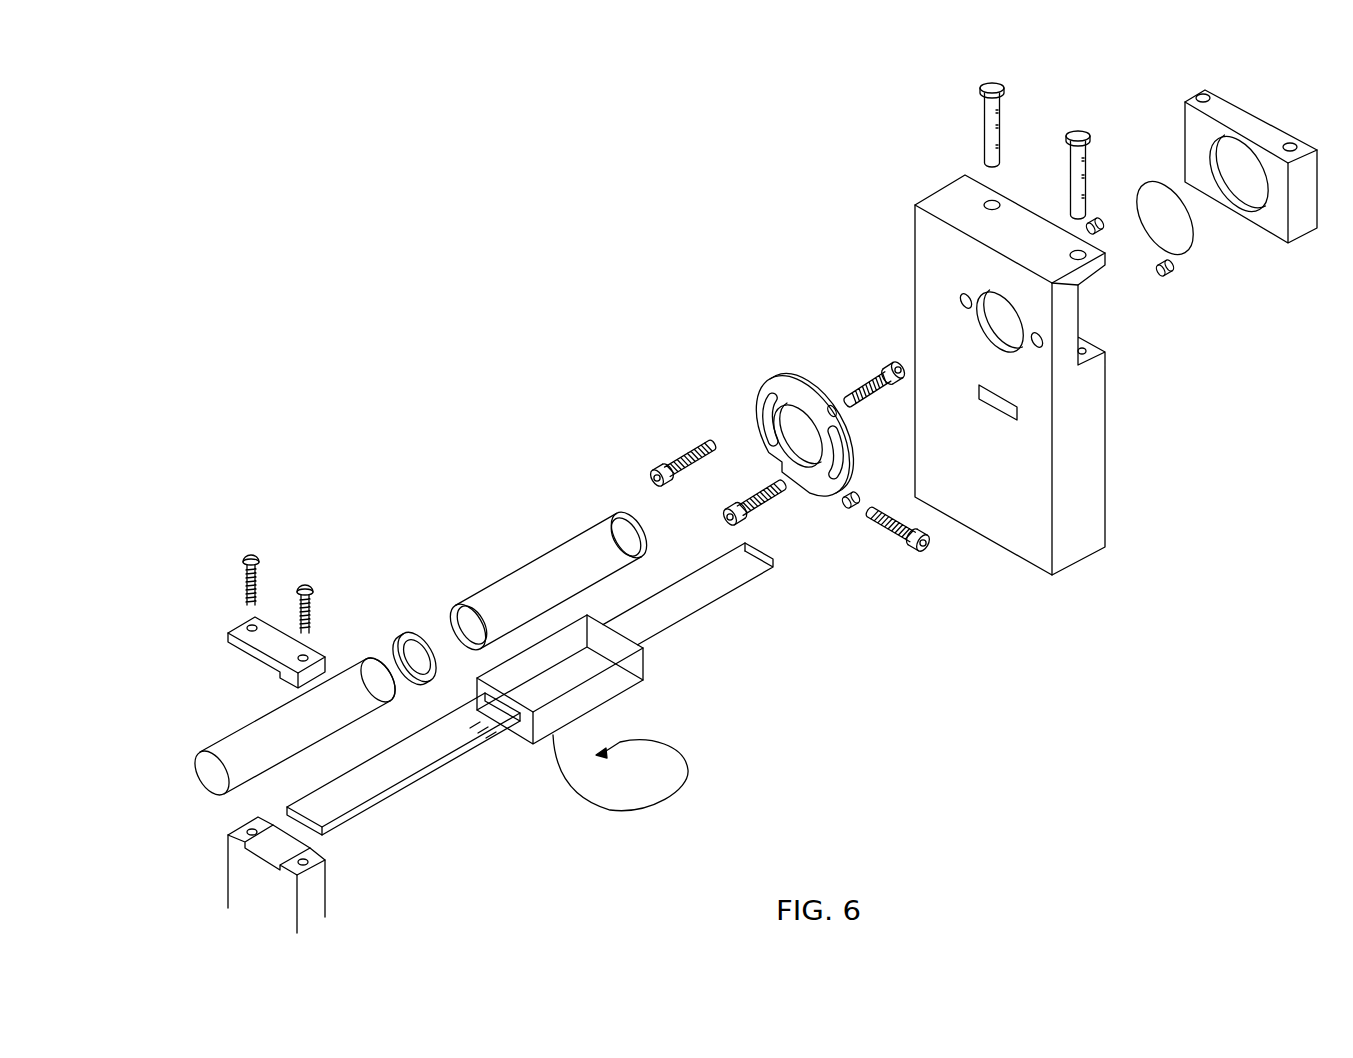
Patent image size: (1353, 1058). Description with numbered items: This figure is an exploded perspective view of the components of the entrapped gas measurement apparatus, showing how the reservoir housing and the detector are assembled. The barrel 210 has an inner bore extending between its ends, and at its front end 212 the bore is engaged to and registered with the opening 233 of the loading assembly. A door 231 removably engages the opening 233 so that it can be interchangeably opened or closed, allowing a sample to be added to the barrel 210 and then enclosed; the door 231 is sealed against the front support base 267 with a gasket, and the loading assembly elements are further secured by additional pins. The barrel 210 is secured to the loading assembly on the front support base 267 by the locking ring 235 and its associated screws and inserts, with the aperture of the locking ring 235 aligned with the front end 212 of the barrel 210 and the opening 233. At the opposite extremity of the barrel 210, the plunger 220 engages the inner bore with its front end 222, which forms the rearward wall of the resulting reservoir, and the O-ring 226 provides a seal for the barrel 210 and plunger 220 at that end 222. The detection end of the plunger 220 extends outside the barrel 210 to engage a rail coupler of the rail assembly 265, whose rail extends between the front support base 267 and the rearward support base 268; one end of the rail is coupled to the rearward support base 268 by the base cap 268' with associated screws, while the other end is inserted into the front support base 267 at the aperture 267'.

The barrel 210 is at (542, 553).
The front end 212 is at (645, 535).
The plunger 220 is at (355, 662).
The front end 222 is at (372, 672).
The O-ring 226 is at (423, 632).
The door 231 is at (1243, 101).
The opening 233 is at (803, 428).
The locking ring 235 is at (792, 372).
The rail assembly 265 is at (395, 803).
The front support base 267 is at (1066, 375).
The aperture 267' is at (962, 489).
The rearward support base 268 is at (320, 875).
The base cap 268' is at (234, 652).